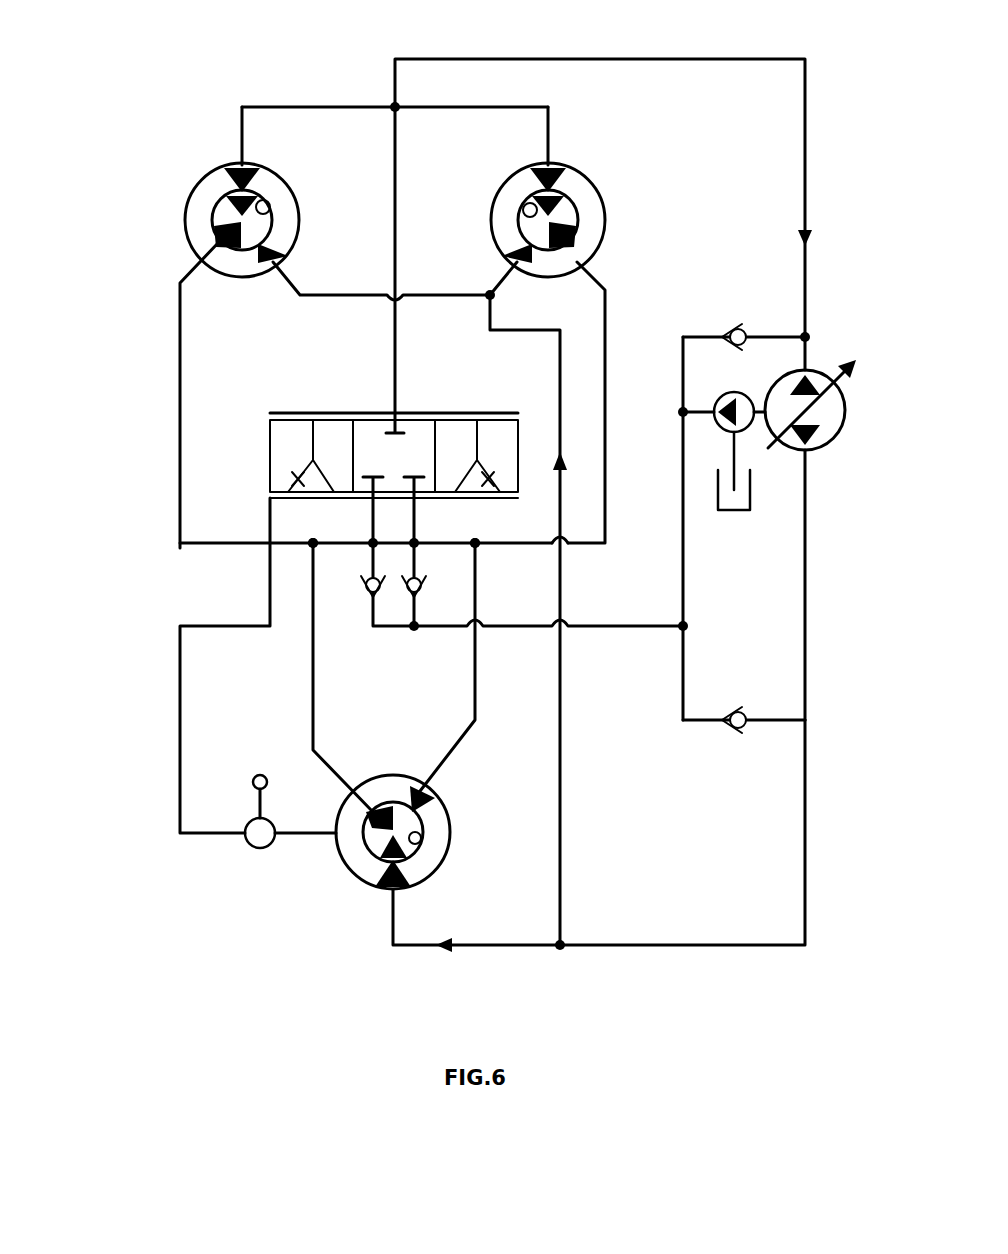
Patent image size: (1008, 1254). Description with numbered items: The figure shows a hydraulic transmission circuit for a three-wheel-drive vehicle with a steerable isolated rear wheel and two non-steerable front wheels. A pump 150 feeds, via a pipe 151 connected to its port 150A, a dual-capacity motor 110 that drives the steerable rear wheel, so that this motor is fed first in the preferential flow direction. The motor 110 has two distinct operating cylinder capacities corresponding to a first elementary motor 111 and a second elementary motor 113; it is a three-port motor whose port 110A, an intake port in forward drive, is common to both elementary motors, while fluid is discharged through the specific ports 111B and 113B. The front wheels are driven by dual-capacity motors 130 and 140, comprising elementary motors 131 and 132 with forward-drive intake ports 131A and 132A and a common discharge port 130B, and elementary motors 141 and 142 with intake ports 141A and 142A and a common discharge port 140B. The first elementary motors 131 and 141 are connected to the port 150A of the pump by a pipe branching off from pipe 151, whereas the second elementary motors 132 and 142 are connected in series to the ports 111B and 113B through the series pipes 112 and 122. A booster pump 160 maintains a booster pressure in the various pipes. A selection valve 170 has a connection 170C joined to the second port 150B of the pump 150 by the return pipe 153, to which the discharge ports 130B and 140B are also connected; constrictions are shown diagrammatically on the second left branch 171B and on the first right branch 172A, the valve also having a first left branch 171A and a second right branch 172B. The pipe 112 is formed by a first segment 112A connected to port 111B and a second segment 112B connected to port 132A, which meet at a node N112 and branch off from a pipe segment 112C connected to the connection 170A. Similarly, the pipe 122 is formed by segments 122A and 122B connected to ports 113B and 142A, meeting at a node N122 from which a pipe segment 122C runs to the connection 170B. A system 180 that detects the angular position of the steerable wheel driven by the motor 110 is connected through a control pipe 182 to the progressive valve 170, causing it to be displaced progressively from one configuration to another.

The return pipe 153 is at (594, 59).
The pipe 151 is at (495, 948).
The dual-capacity motor 130 is at (299, 214).
The common discharge port 130B is at (240, 170).
The second elementary motor 132 is at (268, 208).
The forward-drive intake port 132A is at (228, 245).
The forward-drive intake port 131A is at (278, 262).
The first elementary motor 131 is at (240, 283).
The dual-capacity motor 140 is at (559, 201).
The common discharge port 140B is at (548, 168).
The second elementary motor 142 is at (528, 212).
The forward-drive intake port 142A is at (570, 248).
The forward-drive intake port 141A is at (517, 255).
The first elementary motor 141 is at (606, 228).
The second segment 122B is at (607, 332).
The series pipe 122 is at (620, 545).
The second segment 112B is at (180, 428).
The series pipe 112 is at (160, 505).
The selection valve 170 is at (371, 325).
The second right branch 172B is at (325, 460).
The first right branch 172A is at (296, 478).
The first left branch 171A is at (460, 460).
The second left branch 171B is at (505, 480).
The connection 170C is at (410, 428).
The connection 170A is at (373, 497).
The connection 170B is at (418, 497).
The node N112 is at (308, 550).
The node N122 is at (482, 548).
The pipe segment 112C is at (362, 548).
The pipe segment 122C is at (476, 548).
The control pipe 182 is at (180, 672).
The system for detecting the angular position of the steerable wheel 180 is at (232, 848).
The first segment 112A is at (313, 725).
The first segment 122A is at (475, 700).
The dual-capacity motor 110 is at (396, 843).
The intake port 110A is at (390, 892).
The first elementary motor 111 is at (415, 853).
The discharge port 111B is at (370, 812).
The discharge port 113B is at (432, 795).
The second elementary motor 113 is at (392, 785).
The booster pump 160 is at (742, 400).
The pump 150 is at (841, 528).
The second port 150B is at (812, 370).
The port 150A is at (812, 448).